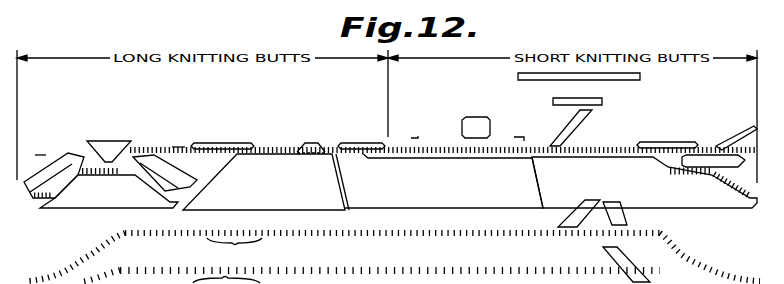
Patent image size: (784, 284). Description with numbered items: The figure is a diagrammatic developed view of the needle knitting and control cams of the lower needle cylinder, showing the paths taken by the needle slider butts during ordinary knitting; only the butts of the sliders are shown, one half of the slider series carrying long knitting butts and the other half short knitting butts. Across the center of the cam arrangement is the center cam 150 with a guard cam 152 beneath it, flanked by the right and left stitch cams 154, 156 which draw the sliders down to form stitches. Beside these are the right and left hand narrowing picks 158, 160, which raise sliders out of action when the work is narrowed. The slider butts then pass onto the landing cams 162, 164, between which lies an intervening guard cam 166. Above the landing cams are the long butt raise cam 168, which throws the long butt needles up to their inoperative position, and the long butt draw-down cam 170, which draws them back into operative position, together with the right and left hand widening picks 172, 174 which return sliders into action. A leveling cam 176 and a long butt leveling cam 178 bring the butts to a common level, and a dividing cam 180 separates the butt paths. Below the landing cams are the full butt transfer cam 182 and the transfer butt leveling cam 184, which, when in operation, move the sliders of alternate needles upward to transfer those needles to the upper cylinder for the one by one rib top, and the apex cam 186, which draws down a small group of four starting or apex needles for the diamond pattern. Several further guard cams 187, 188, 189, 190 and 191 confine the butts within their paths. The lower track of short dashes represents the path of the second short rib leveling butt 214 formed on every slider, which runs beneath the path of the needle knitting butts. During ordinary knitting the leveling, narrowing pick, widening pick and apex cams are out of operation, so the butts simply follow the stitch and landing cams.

The center cam 150 is at (108, 140).
The guard cam 152 is at (109, 189).
The right stitch cam 154 is at (54, 175).
The left stitch cam 156 is at (165, 173).
The right hand narrowing pick 158 is at (40, 152).
The left hand narrowing pick 160 is at (178, 146).
The landing cam 162 is at (266, 182).
The landing cam 164 is at (644, 182).
The intervening guard cam 166 is at (444, 180).
The long butt raise cam 168 is at (313, 143).
The long butt draw-down cam 170 is at (742, 134).
The right hand widening pick 172 is at (414, 136).
The left hand widening pick 174 is at (519, 136).
The leveling cam 176 is at (476, 117).
The long butt leveling cam 178 is at (588, 120).
The dividing cam 180 is at (555, 77).
The full butt transfer cam 182 is at (606, 253).
The transfer butt leveling cam 184 is at (568, 214).
The apex cam 186 is at (630, 218).
The guard cam 187 is at (216, 143).
The guard cam 188 is at (359, 143).
The guard cam 189 is at (598, 103).
The guard cam 190 is at (660, 143).
The guard cam 191 is at (722, 161).
The short rib leveling butt 214 is at (227, 260).